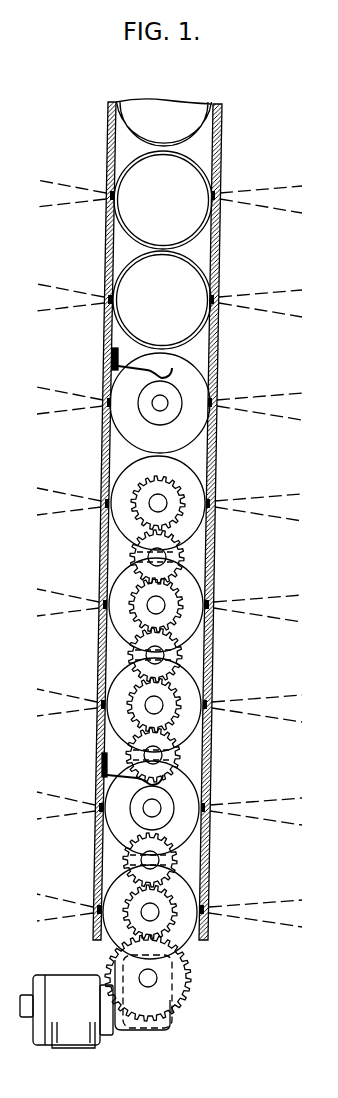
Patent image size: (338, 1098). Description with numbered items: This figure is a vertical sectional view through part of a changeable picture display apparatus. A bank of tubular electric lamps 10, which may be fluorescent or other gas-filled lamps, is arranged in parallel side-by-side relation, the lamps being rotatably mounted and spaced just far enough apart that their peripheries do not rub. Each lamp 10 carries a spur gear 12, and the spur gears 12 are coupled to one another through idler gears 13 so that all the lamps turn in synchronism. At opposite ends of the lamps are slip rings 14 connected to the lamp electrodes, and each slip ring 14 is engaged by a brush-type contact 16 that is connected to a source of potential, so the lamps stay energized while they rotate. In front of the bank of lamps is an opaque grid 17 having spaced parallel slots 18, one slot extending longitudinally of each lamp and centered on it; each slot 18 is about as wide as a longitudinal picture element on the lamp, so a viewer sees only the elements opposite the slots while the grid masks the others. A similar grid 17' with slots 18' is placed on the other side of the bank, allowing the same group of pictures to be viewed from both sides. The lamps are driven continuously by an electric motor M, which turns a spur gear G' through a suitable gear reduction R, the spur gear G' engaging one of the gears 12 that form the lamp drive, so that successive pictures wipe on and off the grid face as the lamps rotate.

The tubular electric lamp 10 is at (122, 272).
The spur gear 12 is at (173, 690).
The idler gear 13 is at (178, 556).
The slip ring 14 is at (182, 393).
The brush-type contact 16 is at (132, 782).
The opaque grid 17 is at (229, 522).
The opaque grid 17' is at (87, 521).
The slot 18 is at (230, 552).
The slot 18' is at (85, 552).
The spur gear G' is at (162, 981).
The gear reduction R is at (137, 1023).
The electric motor M is at (66, 1011).